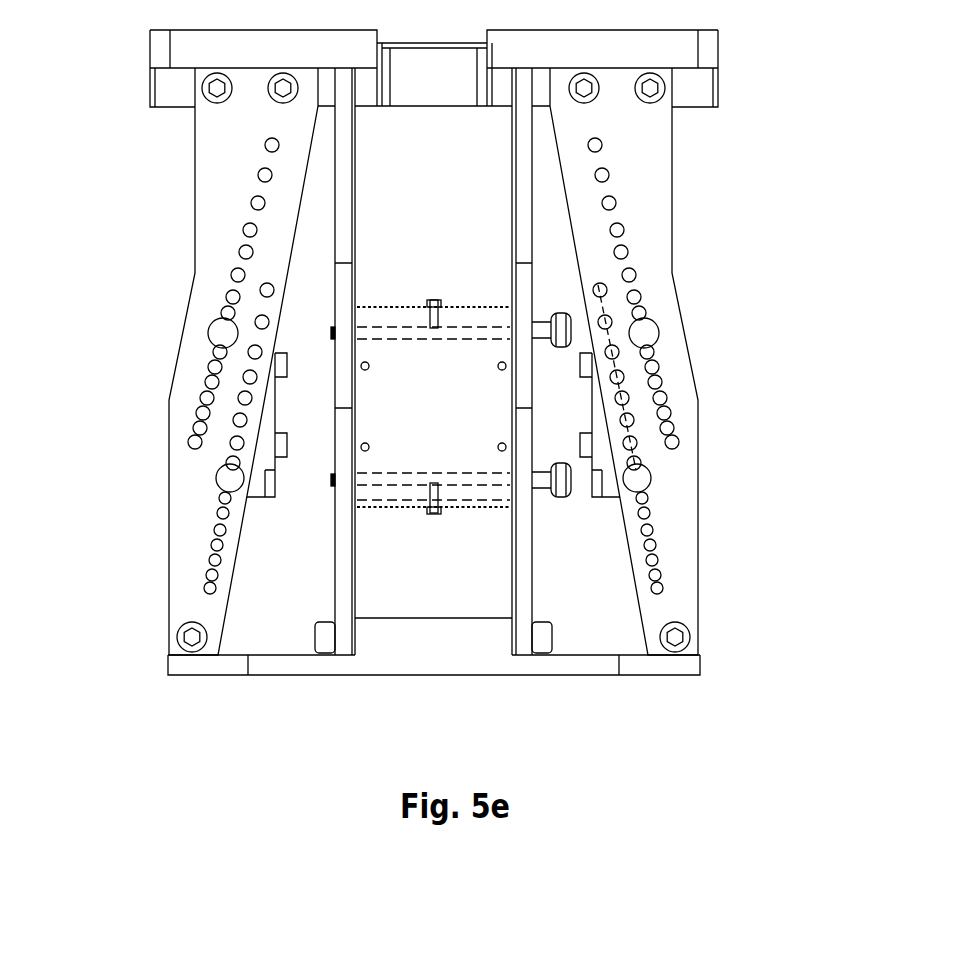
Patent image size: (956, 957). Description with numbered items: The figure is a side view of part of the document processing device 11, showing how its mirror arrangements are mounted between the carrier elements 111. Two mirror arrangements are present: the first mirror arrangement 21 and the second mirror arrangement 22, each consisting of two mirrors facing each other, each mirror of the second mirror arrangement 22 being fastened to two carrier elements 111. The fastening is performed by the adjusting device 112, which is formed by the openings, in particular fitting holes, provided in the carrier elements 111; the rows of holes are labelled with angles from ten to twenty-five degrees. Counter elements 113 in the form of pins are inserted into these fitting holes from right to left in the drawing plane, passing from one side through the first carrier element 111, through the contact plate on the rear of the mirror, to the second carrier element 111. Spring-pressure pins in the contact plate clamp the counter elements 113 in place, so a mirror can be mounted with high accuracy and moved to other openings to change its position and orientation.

The document processing device 11 is at (718, 152).
The carrier element 111 is at (197, 168).
The adjusting device 112 is at (215, 351).
The counter element 113 is at (566, 498).
The first mirror arrangement 21 is at (268, 448).
The second mirror arrangement 22 is at (461, 507).